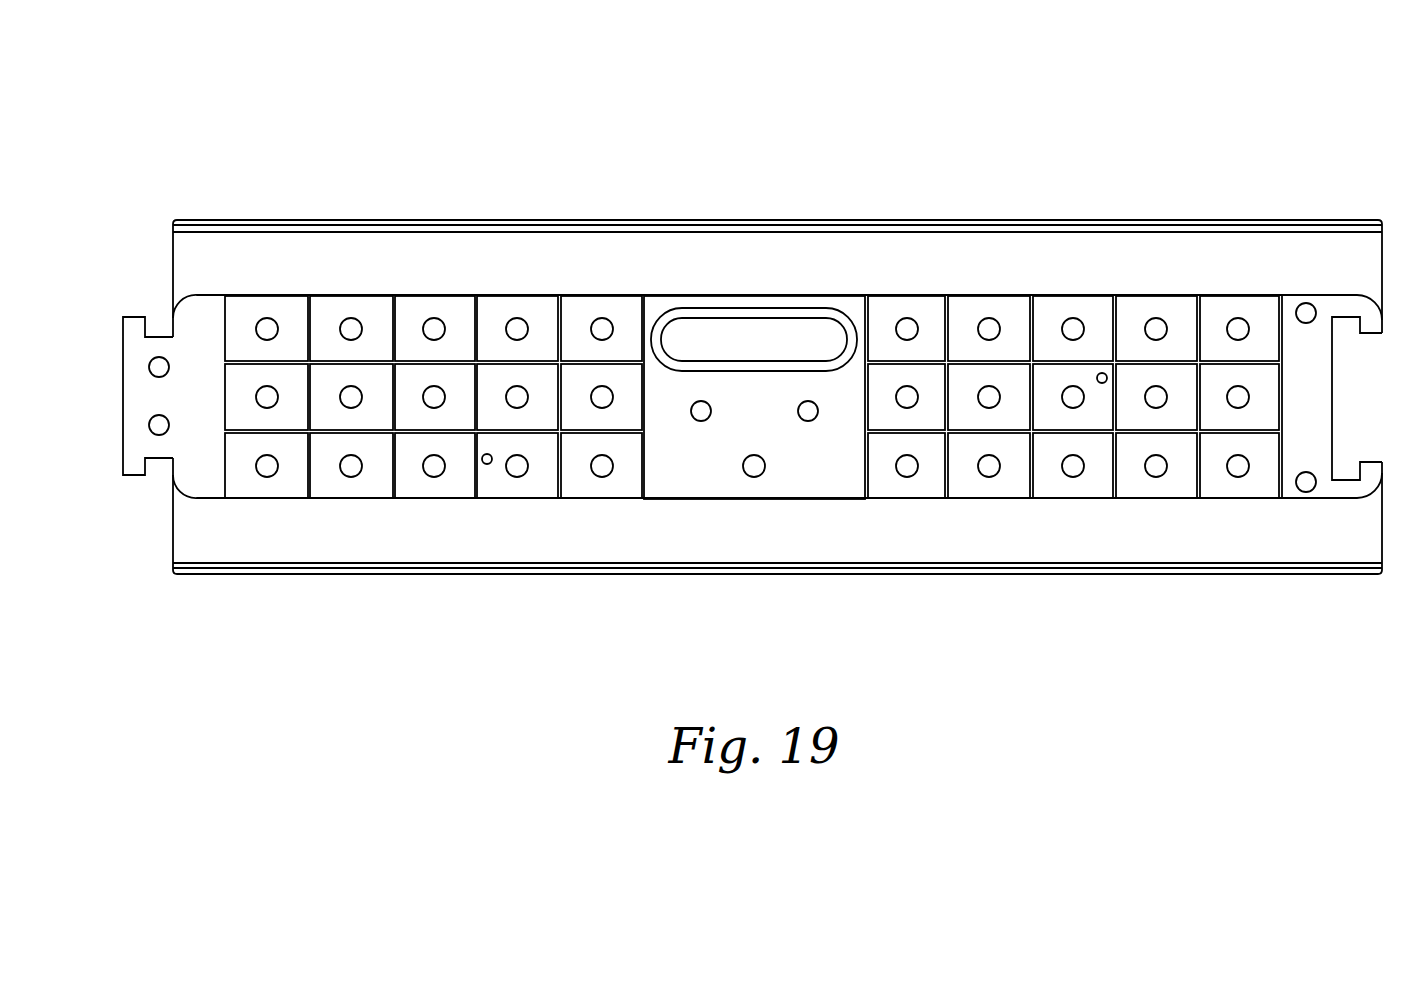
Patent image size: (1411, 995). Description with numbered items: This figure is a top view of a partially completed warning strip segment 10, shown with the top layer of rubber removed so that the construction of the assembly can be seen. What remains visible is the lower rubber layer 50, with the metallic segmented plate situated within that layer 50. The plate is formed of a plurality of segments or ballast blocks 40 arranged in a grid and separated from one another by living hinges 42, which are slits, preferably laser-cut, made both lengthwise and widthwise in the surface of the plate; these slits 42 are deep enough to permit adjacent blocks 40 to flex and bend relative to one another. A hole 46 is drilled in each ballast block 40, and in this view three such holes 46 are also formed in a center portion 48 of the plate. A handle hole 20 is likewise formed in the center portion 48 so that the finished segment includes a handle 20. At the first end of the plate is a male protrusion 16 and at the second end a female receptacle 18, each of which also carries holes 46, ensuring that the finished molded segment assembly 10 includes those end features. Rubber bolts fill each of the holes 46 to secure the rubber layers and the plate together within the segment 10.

The warning strip segment 10 is at (218, 604).
The male protrusion 16 is at (132, 317).
The female receptacle 18 is at (1372, 346).
The handle hole 20 is at (687, 320).
The ballast block 40 is at (1096, 487).
The living hinge 42 is at (375, 433).
The hole 46 is at (761, 473).
The center portion 48 is at (692, 464).
The lower rubber layer 50 is at (1094, 257).